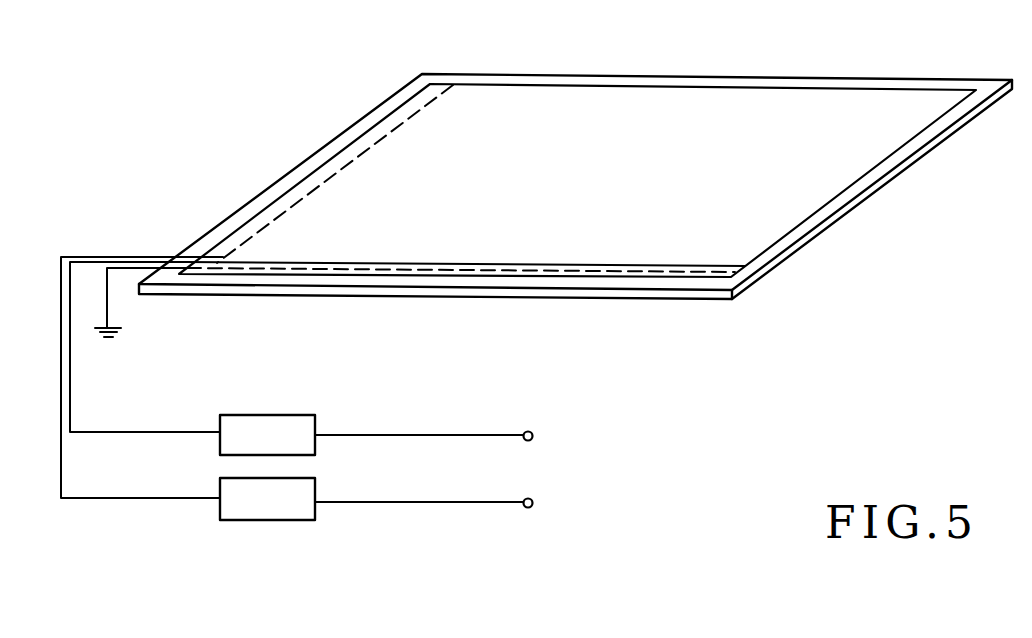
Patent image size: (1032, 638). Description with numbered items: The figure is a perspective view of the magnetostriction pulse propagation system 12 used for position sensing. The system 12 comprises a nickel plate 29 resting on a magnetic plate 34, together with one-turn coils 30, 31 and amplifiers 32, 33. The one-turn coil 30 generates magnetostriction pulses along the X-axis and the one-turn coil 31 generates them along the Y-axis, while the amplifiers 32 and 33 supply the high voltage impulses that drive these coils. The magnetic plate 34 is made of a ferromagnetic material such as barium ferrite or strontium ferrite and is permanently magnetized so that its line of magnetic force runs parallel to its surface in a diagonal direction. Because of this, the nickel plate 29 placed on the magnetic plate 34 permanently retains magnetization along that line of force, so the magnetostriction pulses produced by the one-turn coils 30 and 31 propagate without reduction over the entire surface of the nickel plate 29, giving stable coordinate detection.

The magnetostriction pulse propagation system 12 is at (684, 72).
The nickel plate 29 is at (907, 102).
The one-turn coil 30 is at (337, 165).
The one-turn coil 31 is at (623, 267).
The amplifier 32 is at (300, 478).
The amplifier 33 is at (298, 415).
The magnetic plate 34 is at (683, 299).